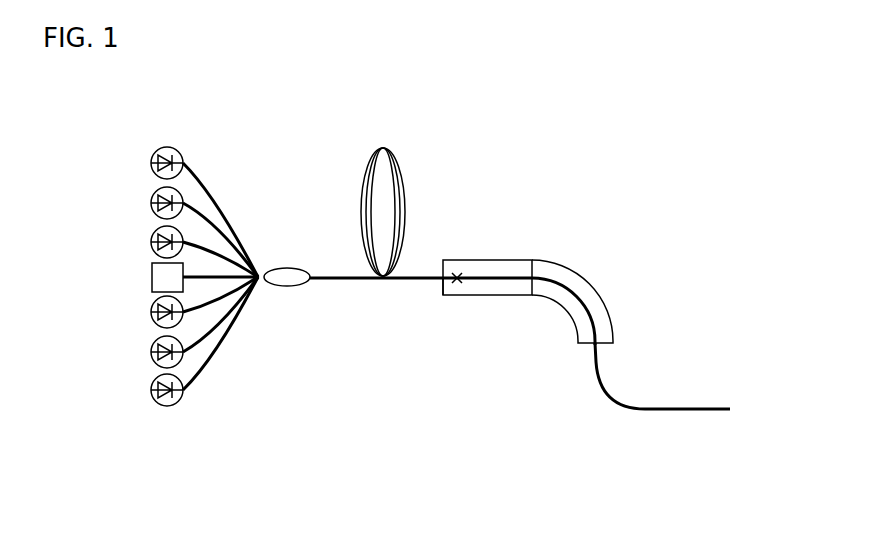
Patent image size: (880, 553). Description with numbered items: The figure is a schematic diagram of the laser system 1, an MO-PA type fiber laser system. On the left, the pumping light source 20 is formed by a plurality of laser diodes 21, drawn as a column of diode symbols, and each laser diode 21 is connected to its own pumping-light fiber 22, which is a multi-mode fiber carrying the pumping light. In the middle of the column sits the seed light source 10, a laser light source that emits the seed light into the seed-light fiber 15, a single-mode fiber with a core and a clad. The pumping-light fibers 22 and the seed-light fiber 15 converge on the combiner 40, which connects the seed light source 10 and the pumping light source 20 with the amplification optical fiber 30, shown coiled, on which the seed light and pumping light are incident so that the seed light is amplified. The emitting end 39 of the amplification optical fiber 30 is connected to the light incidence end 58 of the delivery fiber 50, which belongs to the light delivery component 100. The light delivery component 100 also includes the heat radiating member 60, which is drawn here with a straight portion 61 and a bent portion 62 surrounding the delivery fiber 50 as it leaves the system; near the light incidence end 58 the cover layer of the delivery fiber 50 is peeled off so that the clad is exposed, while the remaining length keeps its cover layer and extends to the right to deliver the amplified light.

The laser system 1 is at (584, 86).
The light delivery component 100 is at (742, 223).
The seed light source 10 is at (175, 282).
The seed-light fiber 15 is at (245, 270).
The pumping light source 20 is at (196, 120).
The laser diode 21 is at (151, 165).
The pumping-light fiber 22 is at (205, 256).
The amplification optical fiber 30 is at (399, 276).
The emitting end 39 is at (463, 283).
The combiner 40 is at (302, 287).
The delivery fiber 50 is at (604, 383).
The light incidence end 58 is at (443, 290).
The heat radiating member 60 is at (584, 233).
The distal end portion 61 is at (506, 267).
The bending portion 62 is at (595, 292).